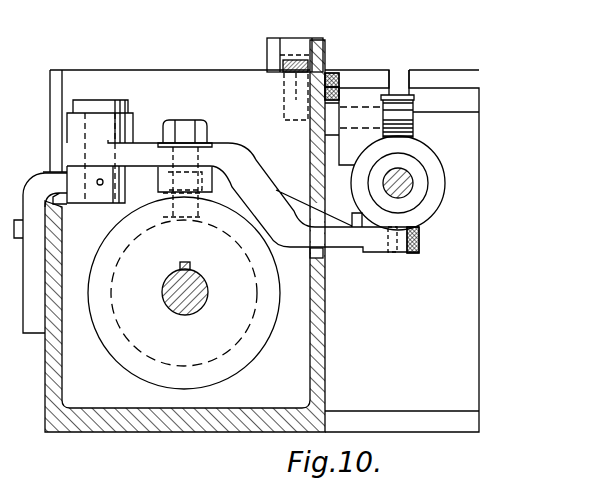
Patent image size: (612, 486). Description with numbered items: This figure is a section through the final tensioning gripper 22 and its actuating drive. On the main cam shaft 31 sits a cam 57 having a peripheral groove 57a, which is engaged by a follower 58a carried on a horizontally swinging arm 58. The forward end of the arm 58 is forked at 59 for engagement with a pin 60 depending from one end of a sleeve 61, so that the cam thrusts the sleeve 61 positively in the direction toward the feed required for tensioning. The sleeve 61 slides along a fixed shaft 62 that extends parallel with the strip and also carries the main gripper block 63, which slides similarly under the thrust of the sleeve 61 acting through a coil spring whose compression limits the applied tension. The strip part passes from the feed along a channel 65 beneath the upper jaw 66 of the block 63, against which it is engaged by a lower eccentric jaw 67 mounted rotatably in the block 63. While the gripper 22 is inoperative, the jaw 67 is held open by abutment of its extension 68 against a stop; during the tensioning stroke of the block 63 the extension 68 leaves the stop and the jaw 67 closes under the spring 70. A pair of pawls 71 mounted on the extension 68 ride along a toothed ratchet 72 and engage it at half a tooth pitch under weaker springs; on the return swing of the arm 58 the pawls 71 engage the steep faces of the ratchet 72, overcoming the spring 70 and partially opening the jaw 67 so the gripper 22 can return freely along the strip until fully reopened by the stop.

The final tensioning gripper 22 is at (428, 126).
The main cam shaft 31 is at (162, 293).
The cam 57 is at (228, 378).
The peripheral groove 57a is at (243, 340).
The horizontally swinging arm 58 is at (252, 183).
The follower 58a is at (141, 223).
The fork 59 is at (373, 252).
The pin 60 is at (421, 246).
The sleeve 61 is at (416, 200).
The fixed shaft 62 is at (413, 187).
The main gripper block 63 is at (348, 145).
The channel 65 is at (399, 76).
The upper jaw 66 is at (401, 95).
The lower eccentric jaw 67 is at (413, 133).
The extension 68 is at (331, 82).
The spring 70 is at (338, 88).
The pawls 71 is at (285, 70).
The toothed ratchet 72 is at (298, 45).